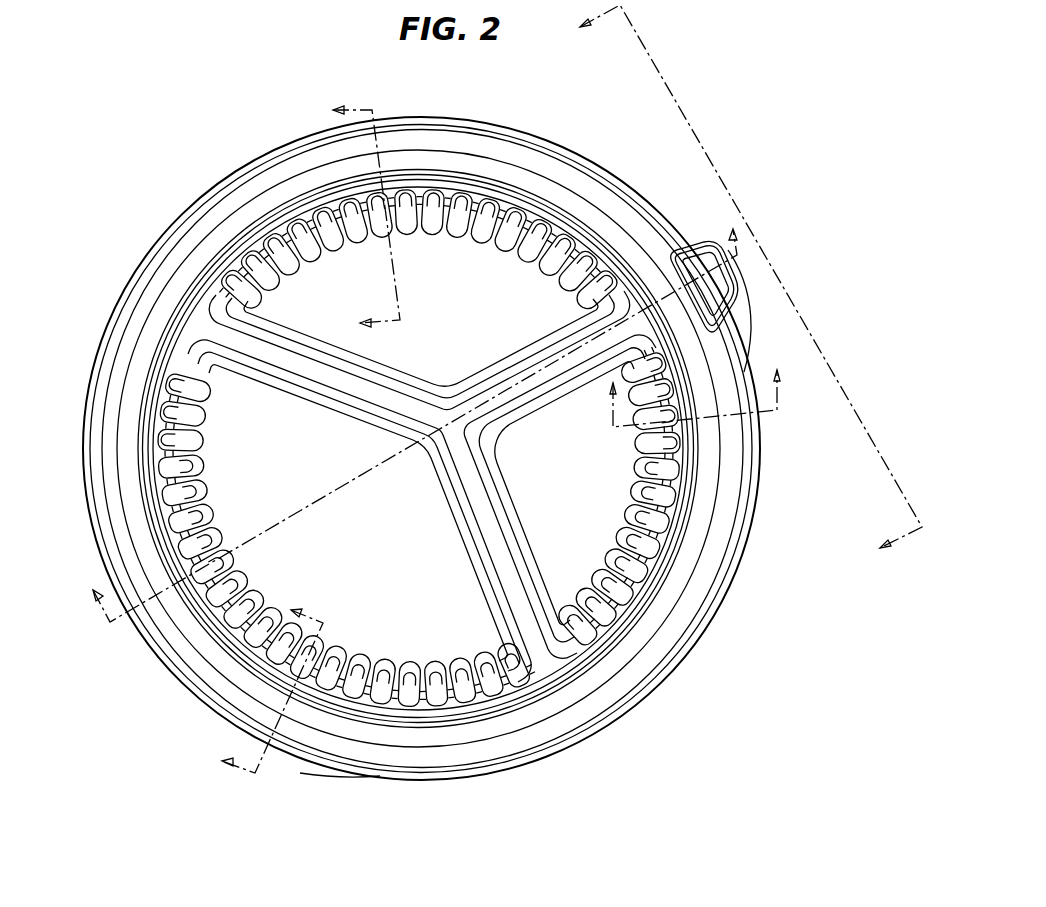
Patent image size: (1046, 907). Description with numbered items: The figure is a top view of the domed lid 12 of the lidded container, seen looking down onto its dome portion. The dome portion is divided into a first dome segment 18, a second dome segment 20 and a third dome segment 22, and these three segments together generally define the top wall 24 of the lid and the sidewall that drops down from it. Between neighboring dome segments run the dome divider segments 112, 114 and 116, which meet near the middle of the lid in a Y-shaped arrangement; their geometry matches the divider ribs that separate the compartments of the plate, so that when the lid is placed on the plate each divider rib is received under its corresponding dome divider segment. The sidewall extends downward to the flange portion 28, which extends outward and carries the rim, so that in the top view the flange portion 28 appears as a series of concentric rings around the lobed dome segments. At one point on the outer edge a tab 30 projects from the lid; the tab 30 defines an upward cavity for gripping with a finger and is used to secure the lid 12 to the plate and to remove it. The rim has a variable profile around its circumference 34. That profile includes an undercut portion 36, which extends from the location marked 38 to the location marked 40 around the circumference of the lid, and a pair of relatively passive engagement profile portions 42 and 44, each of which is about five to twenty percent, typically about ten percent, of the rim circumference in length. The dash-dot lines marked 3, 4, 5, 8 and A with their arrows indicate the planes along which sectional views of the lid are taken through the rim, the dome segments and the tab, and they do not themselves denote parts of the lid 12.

The domed lid 12 is at (84, 470).
The first dome segment 18 is at (334, 568).
The second dome segment 20 is at (572, 497).
The third dome segment 22 is at (341, 299).
The top wall 24 is at (228, 447).
The flange portion 28 is at (243, 190).
The tab 30 is at (694, 240).
The circumference 34 is at (338, 772).
The undercut portion 36 is at (180, 226).
The undercut portion start 38 is at (712, 604).
The undercut portion end 40 is at (428, 118).
The passive engagement profile portion 42 is at (744, 509).
The passive engagement profile portion 44 is at (588, 154).
The dome divider segment 112 is at (535, 637).
The dome divider segment 114 is at (517, 400).
The dome divider segment 116 is at (243, 337).
The section line 3- 3 is at (741, 286).
The section line 4- 4 is at (258, 681).
The section line 5- 5 is at (697, 392).
The section line 8- 8 is at (354, 217).
The section line A- A is at (405, 409).